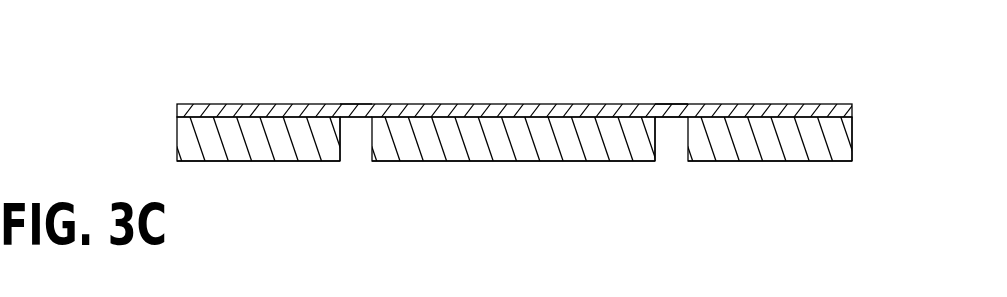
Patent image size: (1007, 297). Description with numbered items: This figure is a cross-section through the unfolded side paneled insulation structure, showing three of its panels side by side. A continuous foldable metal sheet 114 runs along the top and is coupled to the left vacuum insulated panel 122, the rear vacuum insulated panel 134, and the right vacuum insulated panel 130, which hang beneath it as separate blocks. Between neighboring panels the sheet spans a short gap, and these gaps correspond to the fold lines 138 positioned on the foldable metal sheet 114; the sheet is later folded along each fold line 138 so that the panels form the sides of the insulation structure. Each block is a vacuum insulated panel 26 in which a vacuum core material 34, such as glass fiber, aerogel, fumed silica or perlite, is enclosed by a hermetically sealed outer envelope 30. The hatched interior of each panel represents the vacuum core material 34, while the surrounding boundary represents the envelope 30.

The foldable metal sheet 114 is at (577, 103).
The fold line 138 is at (358, 103).
The left vacuum insulated panel 122 is at (210, 128).
The rear vacuum insulated panel 134 is at (456, 126).
The right vacuum insulated panel 130 is at (746, 126).
The vacuum core material 34 is at (288, 148).
The hermetically sealed envelope 30 is at (203, 162).
The vacuum insulated panel 26 is at (330, 150).